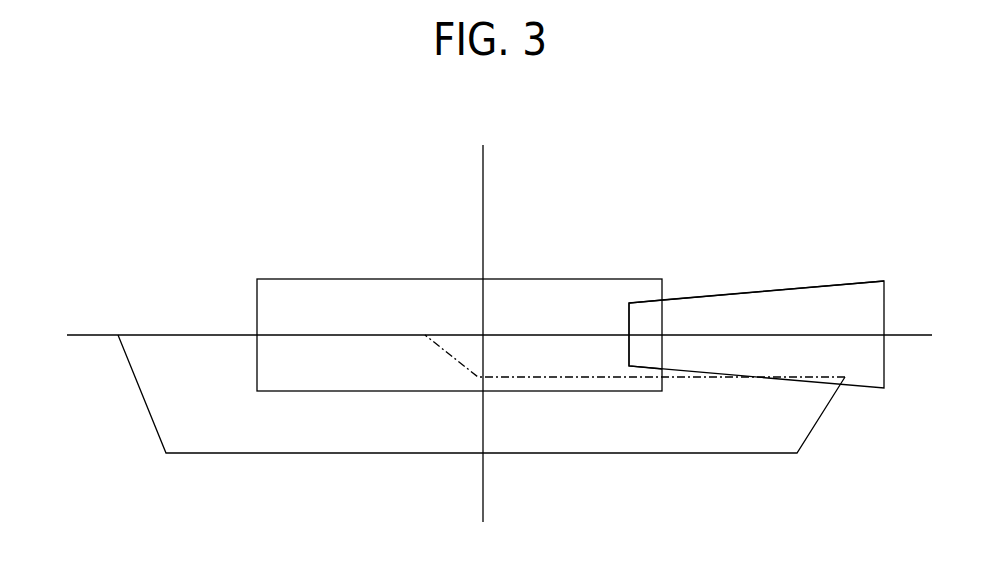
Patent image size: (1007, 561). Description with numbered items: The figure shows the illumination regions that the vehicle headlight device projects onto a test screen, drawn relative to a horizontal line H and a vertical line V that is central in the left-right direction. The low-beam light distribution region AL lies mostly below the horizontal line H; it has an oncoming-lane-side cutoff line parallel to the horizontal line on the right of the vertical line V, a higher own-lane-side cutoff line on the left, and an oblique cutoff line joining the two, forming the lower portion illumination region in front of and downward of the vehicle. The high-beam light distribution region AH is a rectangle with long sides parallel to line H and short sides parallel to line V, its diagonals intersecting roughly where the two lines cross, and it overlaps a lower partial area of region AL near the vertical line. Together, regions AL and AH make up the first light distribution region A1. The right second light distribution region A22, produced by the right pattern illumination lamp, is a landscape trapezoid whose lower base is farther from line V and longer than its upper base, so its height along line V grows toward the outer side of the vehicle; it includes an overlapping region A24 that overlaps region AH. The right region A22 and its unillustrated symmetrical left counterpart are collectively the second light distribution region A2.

The first light distribution region A1 is at (442, 317).
The high-beam light distribution region AH is at (340, 278).
The low-beam light distribution region AL is at (300, 453).
The second light distribution region A2 is at (766, 264).
The right second light distribution region A22 is at (712, 312).
The overlapping region A24 is at (648, 302).
The horizontal line H is at (500, 321).
The vertical line V is at (496, 336).